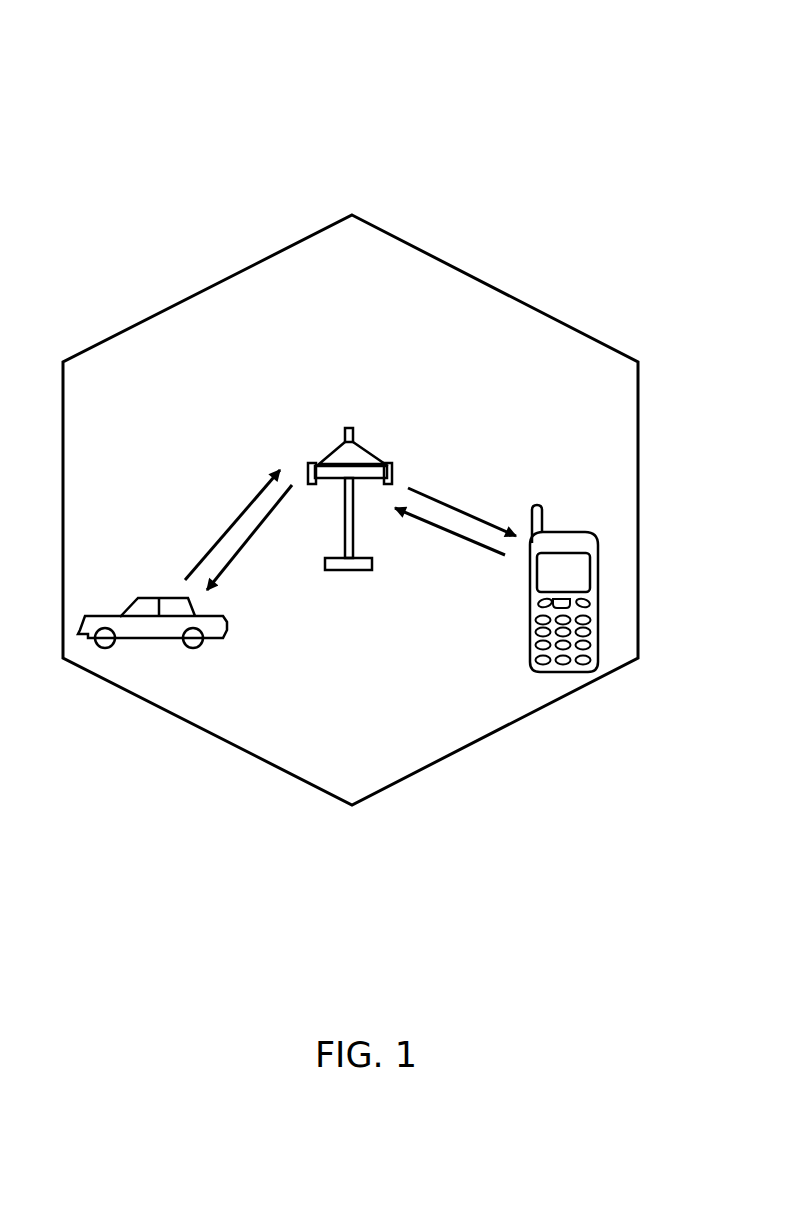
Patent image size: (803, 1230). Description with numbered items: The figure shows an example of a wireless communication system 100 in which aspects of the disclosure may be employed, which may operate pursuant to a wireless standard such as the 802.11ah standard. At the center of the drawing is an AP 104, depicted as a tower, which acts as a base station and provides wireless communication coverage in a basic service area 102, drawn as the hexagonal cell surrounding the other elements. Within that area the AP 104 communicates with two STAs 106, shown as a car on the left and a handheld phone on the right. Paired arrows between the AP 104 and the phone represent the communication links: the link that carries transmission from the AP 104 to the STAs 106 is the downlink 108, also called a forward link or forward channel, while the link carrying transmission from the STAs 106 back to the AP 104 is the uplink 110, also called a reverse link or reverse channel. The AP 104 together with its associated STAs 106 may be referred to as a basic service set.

The wireless communication system 100 is at (612, 98).
The basic service area 102 is at (615, 352).
The AP 104 is at (349, 428).
The STAs 106 is at (155, 598).
The downlink 108 is at (445, 495).
The uplink 110 is at (397, 533).